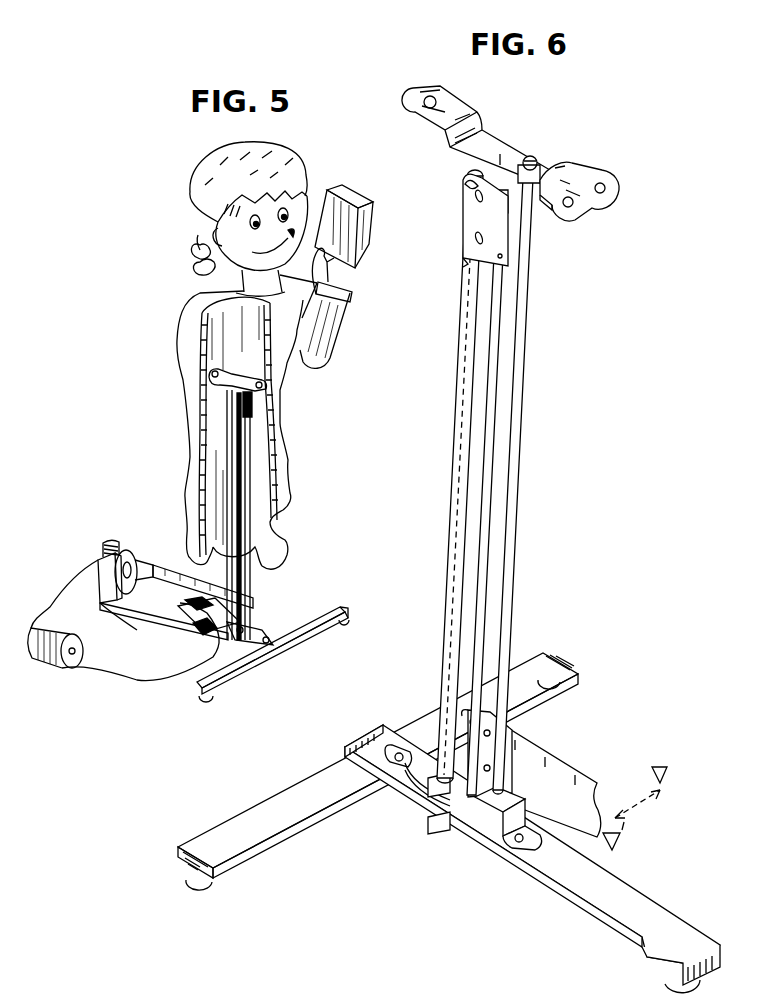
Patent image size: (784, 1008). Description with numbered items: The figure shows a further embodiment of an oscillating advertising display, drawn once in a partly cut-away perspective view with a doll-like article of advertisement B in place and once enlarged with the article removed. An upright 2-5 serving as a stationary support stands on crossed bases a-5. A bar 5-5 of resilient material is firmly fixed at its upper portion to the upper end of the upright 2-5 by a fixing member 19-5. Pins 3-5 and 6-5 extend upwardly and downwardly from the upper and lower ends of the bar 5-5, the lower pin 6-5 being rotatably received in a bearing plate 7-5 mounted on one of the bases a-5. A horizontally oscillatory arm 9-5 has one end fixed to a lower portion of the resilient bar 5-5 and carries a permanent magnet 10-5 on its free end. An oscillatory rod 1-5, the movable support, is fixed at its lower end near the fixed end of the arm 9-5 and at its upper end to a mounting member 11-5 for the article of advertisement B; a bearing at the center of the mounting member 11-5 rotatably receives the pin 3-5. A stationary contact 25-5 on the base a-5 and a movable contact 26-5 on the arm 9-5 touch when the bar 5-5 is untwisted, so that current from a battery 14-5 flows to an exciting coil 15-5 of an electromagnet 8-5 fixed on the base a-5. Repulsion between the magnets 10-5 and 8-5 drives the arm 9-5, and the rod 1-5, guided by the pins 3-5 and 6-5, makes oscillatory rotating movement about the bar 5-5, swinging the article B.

In FIG. 5, the article of advertisement B is at (284, 390).
In FIG. 5, the oscillatory rod 1-5 is at (228, 472).
In FIG. 6, the oscillatory rod 1-5 is at (522, 368).
In FIG. 5, the upright 2-5 is at (250, 503).
In FIG. 6, the upright 2-5 is at (467, 326).
In FIG. 6, the pin 3-5 is at (503, 158).
In FIG. 5, the bar of resilient material 5-5 is at (243, 457).
In FIG. 6, the bar of resilient material 5-5 is at (492, 397).
In FIG. 6, the pin 6-5 is at (463, 787).
In FIG. 6, the bearing plate 7-5 is at (487, 807).
In FIG. 5, the electromagnet 8-5 is at (118, 575).
In FIG. 5, the horizontally oscillatory arm 9-5 is at (177, 573).
In FIG. 6, the horizontally oscillatory arm 9-5 is at (557, 775).
In FIG. 5, the permanent magnet 10-5 is at (124, 552).
In FIG. 5, the mounting member 11-5 is at (215, 384).
In FIG. 6, the mounting member 11-5 is at (597, 197).
In FIG. 5, the battery 14-5 is at (75, 655).
In FIG. 5, the exciting coil 15-5 is at (103, 546).
In FIG. 6, the fixing member 19-5 is at (493, 252).
In FIG. 5, the stationary contact 25-5 is at (198, 628).
In FIG. 5, the movable contact 26-5 is at (213, 608).
In FIG. 5, the bases a-5 is at (178, 610).
In FIG. 6, the bases a-5 is at (277, 817).